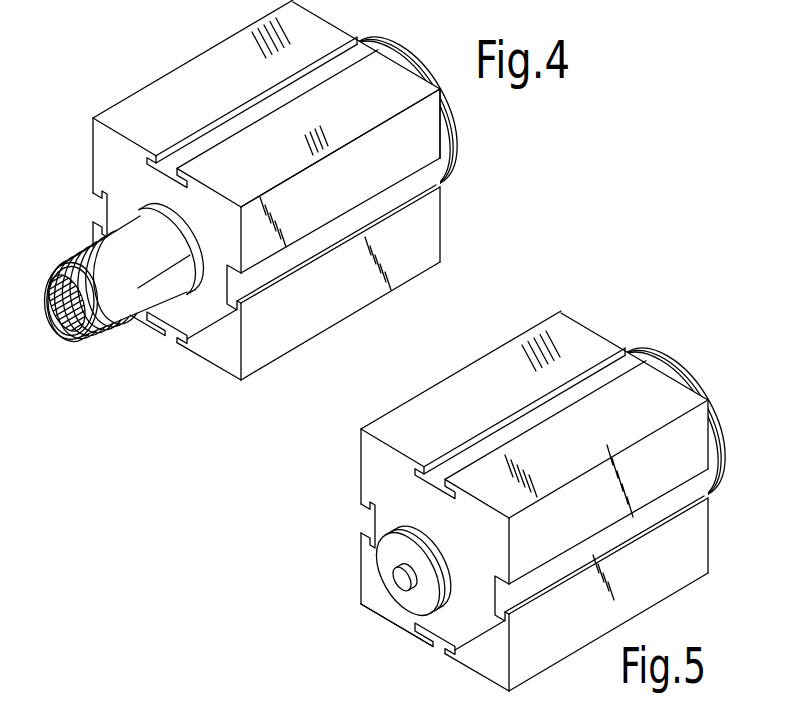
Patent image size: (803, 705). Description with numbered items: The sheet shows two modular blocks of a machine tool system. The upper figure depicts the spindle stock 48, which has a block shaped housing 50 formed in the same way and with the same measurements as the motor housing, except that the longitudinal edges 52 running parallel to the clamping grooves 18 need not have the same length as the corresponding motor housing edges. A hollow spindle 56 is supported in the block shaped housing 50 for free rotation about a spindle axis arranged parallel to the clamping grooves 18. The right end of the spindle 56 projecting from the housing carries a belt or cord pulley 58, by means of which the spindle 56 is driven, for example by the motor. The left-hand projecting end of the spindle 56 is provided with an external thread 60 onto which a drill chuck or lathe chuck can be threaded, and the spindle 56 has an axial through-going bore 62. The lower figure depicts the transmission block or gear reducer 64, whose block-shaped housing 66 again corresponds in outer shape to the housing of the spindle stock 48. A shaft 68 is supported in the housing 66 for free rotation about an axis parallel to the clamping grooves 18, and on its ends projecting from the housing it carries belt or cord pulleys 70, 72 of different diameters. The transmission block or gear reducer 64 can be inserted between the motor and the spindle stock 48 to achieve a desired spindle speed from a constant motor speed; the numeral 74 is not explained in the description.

In FIG. 4, the clamping grooves 18 is at (330, 62).
In FIG. 5, the clamping grooves 18 is at (483, 447).
In FIG. 4, the spindle stock 48 is at (135, 83).
In FIG. 4, the block shaped housing 50 is at (428, 131).
In FIG. 4, the longitudinal edges 52 is at (187, 58).
In FIG. 4, the hollow spindle 56 is at (133, 323).
In FIG. 4, the belt or cord pulley 58 is at (410, 45).
In FIG. 4, the external thread 60 is at (78, 260).
In FIG. 4, the axial through-going bore 62 is at (63, 322).
In FIG. 5, the transmission block or gear reducer 64 is at (585, 315).
In FIG. 5, the block-shaped housing 66 is at (495, 370).
In FIG. 5, the shaft 68 is at (397, 580).
In FIG. 5, the belt or cord pulley 70 is at (418, 557).
In FIG. 5, the belt or cord pulley 72 is at (653, 347).
In FIG. 5, the bottom edge 74 is at (381, 654).